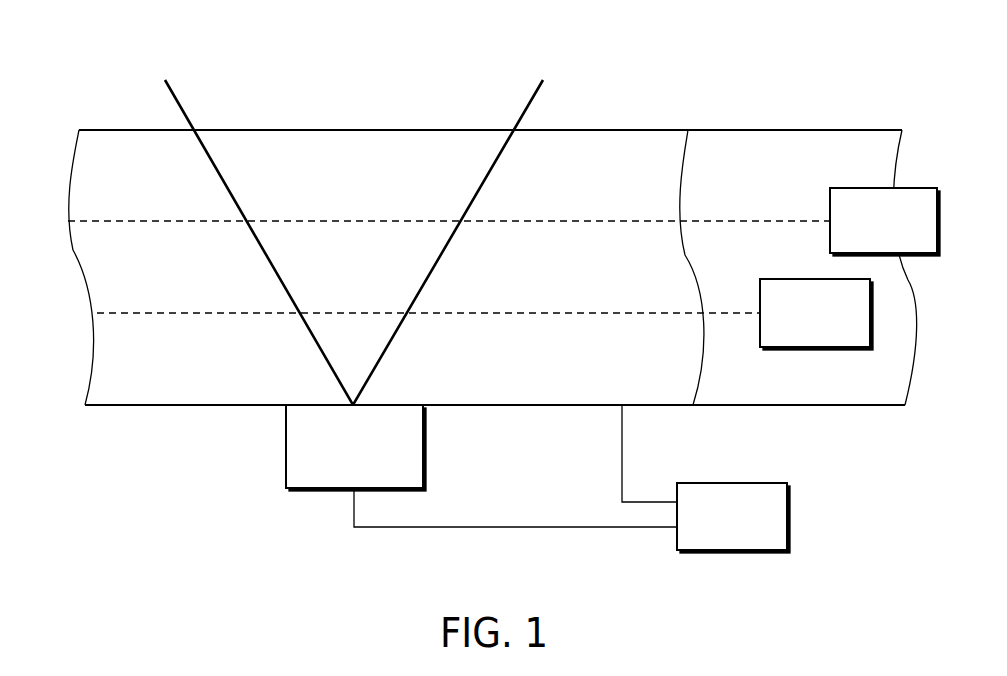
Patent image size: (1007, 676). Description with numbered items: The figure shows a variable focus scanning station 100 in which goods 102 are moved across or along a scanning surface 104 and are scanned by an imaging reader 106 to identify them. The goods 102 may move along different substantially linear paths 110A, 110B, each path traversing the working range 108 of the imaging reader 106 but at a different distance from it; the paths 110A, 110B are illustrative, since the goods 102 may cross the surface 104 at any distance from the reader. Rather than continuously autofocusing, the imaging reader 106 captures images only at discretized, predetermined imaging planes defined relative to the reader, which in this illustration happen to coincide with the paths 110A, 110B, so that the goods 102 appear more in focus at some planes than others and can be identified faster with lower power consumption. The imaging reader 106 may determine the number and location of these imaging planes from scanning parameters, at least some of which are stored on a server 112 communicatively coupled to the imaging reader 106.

The scanning station 100 is at (97, 43).
The goods 102 is at (903, 233).
The scanning surface 104 is at (789, 136).
The imaging reader 106 is at (286, 447).
The working range 108 is at (387, 189).
The first linear path 110A is at (515, 315).
The second linear path 110B is at (590, 220).
The server 112 is at (732, 553).